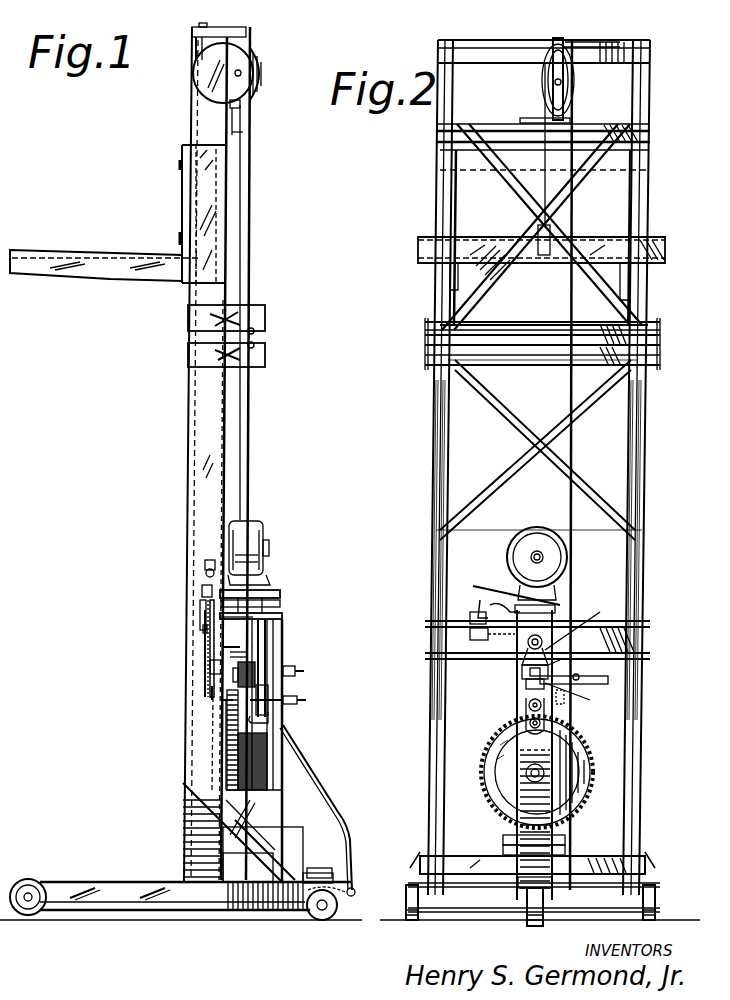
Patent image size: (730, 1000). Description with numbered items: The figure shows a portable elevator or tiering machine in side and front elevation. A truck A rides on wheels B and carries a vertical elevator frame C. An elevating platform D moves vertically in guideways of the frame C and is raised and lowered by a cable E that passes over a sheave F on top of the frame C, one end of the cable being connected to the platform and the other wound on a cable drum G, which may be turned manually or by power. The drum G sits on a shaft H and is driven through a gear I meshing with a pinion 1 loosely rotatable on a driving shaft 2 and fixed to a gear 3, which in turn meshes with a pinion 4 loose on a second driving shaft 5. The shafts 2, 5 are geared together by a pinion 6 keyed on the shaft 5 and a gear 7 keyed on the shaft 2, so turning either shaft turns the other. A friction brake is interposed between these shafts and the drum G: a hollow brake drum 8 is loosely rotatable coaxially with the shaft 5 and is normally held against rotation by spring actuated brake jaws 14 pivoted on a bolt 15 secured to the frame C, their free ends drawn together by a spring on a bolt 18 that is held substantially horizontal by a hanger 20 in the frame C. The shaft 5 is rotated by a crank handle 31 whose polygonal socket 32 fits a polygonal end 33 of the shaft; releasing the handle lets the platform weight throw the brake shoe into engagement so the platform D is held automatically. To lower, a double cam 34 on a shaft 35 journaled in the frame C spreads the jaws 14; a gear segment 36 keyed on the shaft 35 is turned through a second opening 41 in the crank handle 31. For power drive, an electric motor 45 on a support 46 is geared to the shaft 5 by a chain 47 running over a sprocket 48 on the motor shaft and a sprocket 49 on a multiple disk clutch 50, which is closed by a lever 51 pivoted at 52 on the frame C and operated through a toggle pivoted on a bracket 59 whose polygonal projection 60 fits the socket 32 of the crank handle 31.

In FIG. 1, the truck A is at (108, 903).
In FIG. 2, the truck A is at (408, 892).
In FIG. 1, the wheels B is at (30, 915).
In FIG. 2, the wheels B is at (405, 875).
In FIG. 1, the elevator frame C is at (190, 496).
In FIG. 2, the elevator frame C is at (434, 453).
In FIG. 1, the elevating platform D is at (130, 280).
In FIG. 2, the elevating platform D is at (545, 266).
In FIG. 1, the cable E is at (253, 225).
In FIG. 2, the cable E is at (545, 210).
In FIG. 1, the sheave F is at (256, 88).
In FIG. 2, the sheave F is at (540, 90).
In FIG. 1, the cable drum G is at (262, 755).
In FIG. 2, the cable drum G is at (500, 778).
In FIG. 1, the shaft H is at (285, 773).
In FIG. 2, the shaft H is at (528, 780).
In FIG. 1, the gear I is at (227, 745).
In FIG. 2, the gear I is at (575, 820).
In FIG. 1, the pinion 1 is at (220, 708).
In FIG. 1, the driving shaft 2 is at (270, 695).
In FIG. 2, the driving shaft 2 is at (528, 705).
In FIG. 1, the gear 3 is at (228, 666).
In FIG. 1, the pinion 4 is at (248, 655).
In FIG. 1, the second driving shaft 5 is at (302, 671).
In FIG. 2, the second driving shaft 5 is at (526, 684).
In FIG. 1, the pinion 6 is at (238, 668).
In FIG. 1, the gear 7 is at (226, 720).
In FIG. 1, the brake drum 8 is at (282, 660).
In FIG. 1, the brake jaws 14 is at (266, 645).
In FIG. 1, the bolt 15 is at (268, 722).
In FIG. 2, the bolt 15 is at (529, 724).
In FIG. 1, the bolt 18 is at (264, 628).
In FIG. 1, the hanger 20 is at (270, 612).
In FIG. 2, the crank handle 31 is at (573, 699).
In FIG. 2, the polygonal socket 32 is at (522, 672).
In FIG. 1, the polygonal end 33 is at (302, 675).
In FIG. 2, the polygonal end 33 is at (560, 700).
In FIG. 2, the double cam 34 is at (548, 668).
In FIG. 1, the shaft 35 is at (238, 632).
In FIG. 2, the shaft 35 is at (527, 643).
In FIG. 2, the gear segment 36 is at (575, 623).
In FIG. 2, the second opening 41 is at (598, 668).
In FIG. 1, the electric motor 45 is at (263, 545).
In FIG. 2, the electric motor 45 is at (507, 555).
In FIG. 1, the support 46 is at (258, 585).
In FIG. 2, the support 46 is at (473, 586).
In FIG. 1, the chain 47 is at (202, 592).
In FIG. 2, the chain 47 is at (440, 653).
In FIG. 1, the sprocket 48 is at (205, 576).
In FIG. 1, the sprocket 49 is at (204, 690).
In FIG. 1, the multiple disk clutch 50 is at (225, 698).
In FIG. 1, the lever 51 is at (200, 612).
In FIG. 2, the lever 51 is at (470, 634).
In FIG. 1, the pivot 52 is at (205, 634).
In FIG. 2, the bracket 59 is at (470, 618).
In FIG. 2, the polygonal projection 60 is at (478, 600).